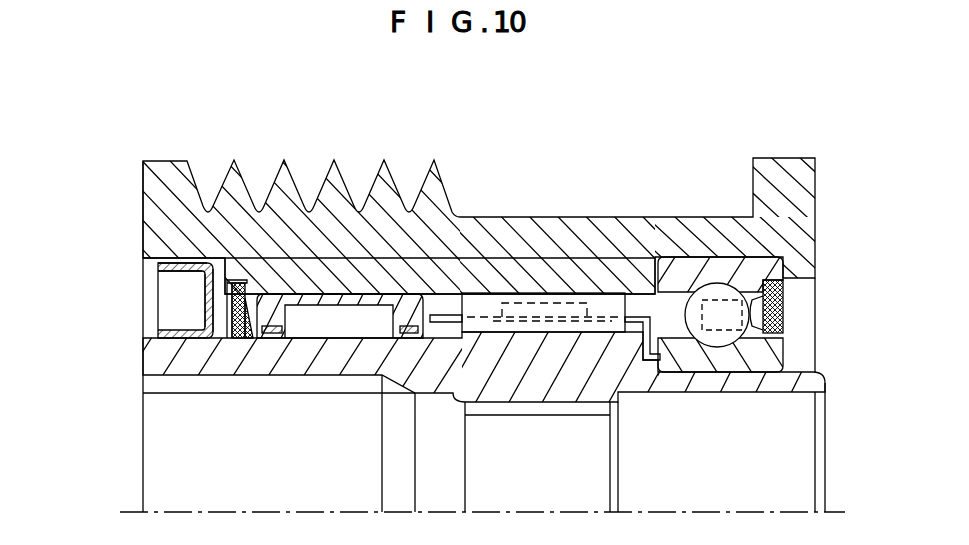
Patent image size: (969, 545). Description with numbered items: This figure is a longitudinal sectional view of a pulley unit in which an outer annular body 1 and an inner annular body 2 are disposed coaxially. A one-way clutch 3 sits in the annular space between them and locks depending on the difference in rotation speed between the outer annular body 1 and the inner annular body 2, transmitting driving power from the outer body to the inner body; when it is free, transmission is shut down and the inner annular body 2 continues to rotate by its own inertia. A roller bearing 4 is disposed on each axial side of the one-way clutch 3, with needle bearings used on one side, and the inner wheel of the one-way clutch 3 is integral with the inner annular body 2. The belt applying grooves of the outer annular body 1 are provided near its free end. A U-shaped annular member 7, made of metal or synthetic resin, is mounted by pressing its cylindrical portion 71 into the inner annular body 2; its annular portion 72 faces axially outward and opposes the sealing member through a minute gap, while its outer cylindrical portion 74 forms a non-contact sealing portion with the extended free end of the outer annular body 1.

The outer annular body 1 is at (155, 187).
The inner annular body 2 is at (153, 362).
The one-way clutch 3 is at (547, 258).
The roller bearing 4 is at (327, 291).
The annular member 7 is at (130, 290).
The cylindrical portion 71 is at (147, 333).
The annular portion 72 is at (198, 298).
The outer cylindrical portion 74 is at (160, 267).